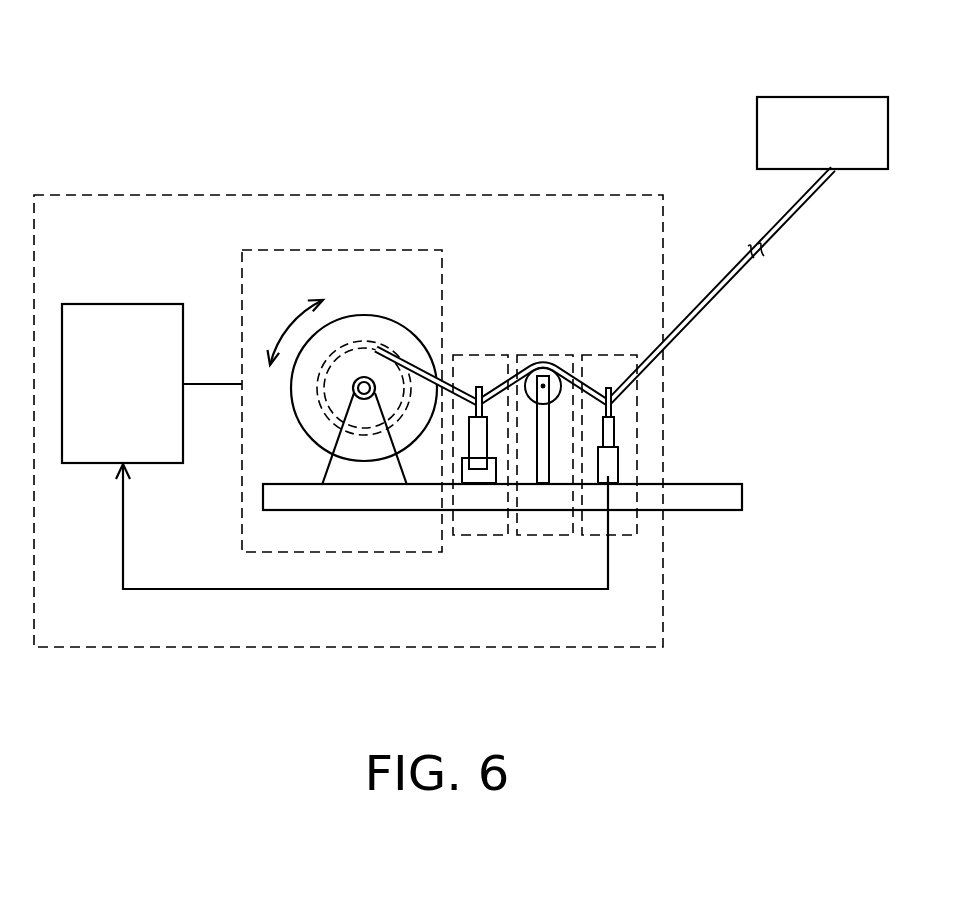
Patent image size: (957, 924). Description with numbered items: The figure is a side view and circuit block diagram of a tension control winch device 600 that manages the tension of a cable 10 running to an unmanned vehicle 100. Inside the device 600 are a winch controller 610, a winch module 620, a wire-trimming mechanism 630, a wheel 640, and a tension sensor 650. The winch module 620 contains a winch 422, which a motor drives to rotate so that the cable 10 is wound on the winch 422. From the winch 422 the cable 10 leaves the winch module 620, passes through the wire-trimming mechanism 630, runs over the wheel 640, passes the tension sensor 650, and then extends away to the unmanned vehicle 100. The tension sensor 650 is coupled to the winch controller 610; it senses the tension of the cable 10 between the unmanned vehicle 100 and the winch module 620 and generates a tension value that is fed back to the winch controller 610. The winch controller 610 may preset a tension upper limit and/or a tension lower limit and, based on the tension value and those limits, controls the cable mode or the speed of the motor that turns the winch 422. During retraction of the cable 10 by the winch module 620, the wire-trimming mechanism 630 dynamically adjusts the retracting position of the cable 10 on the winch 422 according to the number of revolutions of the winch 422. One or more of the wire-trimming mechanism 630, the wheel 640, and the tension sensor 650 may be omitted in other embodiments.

The cable 10 is at (441, 383).
The unmanned vehicle 100 is at (823, 96).
The winch 422 is at (372, 315).
The tension control winch device 600 is at (325, 195).
The winch controller 610 is at (123, 303).
The winch module 620 is at (308, 248).
The wire-trimming mechanism 630 is at (502, 352).
The wheel 640 is at (553, 352).
The tension sensor 650 is at (610, 352).